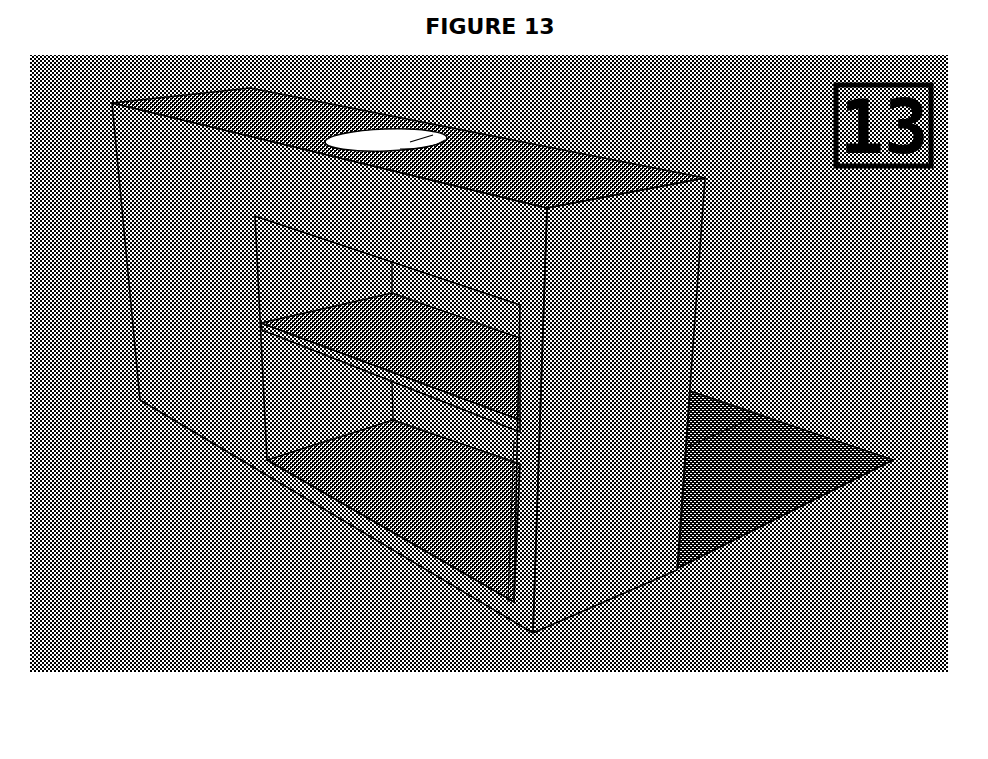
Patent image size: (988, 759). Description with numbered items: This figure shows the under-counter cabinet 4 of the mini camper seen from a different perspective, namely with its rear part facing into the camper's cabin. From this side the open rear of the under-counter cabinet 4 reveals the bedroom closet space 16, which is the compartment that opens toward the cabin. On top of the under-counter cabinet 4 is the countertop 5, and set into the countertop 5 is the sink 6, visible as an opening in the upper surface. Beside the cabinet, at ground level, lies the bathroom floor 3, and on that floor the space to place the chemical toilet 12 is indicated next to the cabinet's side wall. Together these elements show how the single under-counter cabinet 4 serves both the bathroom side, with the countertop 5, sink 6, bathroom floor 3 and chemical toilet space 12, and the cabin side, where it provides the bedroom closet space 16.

The bathroom floor 3 is at (773, 527).
The under-counter cabinet 4 is at (622, 548).
The countertop 5 is at (510, 162).
The sink 6 is at (452, 127).
The space to place the chemical toilet 12 is at (743, 405).
The bedroom closet space 16 is at (490, 512).